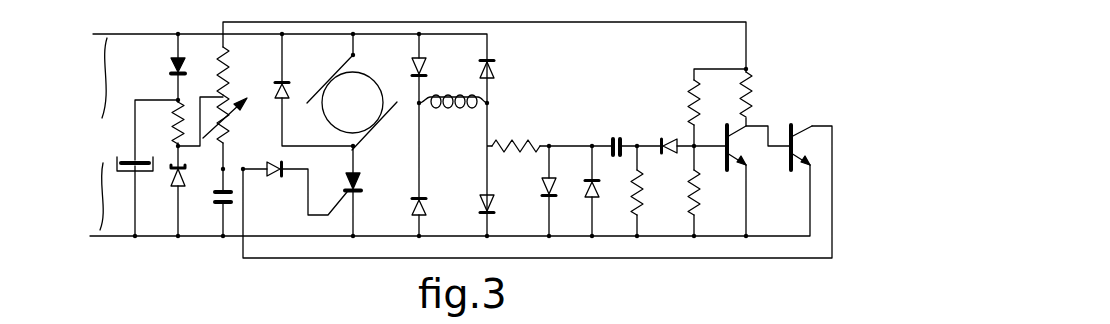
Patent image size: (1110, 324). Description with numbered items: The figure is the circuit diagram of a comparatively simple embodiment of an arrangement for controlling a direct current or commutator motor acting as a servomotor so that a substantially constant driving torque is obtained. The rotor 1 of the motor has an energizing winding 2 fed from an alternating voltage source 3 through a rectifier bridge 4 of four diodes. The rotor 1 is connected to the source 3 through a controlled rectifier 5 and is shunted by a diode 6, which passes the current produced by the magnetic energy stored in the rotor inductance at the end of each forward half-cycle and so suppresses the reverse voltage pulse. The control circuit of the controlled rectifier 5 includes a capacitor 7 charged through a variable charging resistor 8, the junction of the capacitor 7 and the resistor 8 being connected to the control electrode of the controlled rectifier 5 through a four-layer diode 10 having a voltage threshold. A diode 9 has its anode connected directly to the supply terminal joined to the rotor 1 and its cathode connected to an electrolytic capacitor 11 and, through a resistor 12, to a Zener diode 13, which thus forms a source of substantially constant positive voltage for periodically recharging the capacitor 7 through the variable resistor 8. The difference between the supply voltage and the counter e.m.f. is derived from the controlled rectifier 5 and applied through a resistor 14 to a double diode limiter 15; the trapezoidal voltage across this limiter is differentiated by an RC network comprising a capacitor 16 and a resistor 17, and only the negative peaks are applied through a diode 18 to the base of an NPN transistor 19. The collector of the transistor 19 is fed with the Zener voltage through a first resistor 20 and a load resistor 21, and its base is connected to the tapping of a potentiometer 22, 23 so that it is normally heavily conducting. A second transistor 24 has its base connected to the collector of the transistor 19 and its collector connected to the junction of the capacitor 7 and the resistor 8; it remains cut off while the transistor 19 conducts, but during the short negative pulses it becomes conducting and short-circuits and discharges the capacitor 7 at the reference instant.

The rotor 1 is at (345, 114).
The energizing winding 2 is at (455, 109).
The alternating voltage source 3 is at (89, 141).
The rectifier bridge 4 is at (443, 186).
The controlled rectifier 5 is at (361, 178).
The diode 6 is at (277, 88).
The capacitor 7 is at (216, 196).
The variable charging resistor 8 is at (232, 134).
The diode 9 is at (171, 66).
The four-layer diode 10 is at (272, 176).
The electrolytic capacitor 11 is at (128, 172).
The resistor 12 is at (176, 135).
The Zener diode 13 is at (172, 182).
The resistor 14 is at (518, 140).
The double diode limiter 15 is at (558, 226).
The capacitor 16 is at (615, 139).
The resistor 17 is at (641, 203).
The diode 18 is at (664, 139).
The transistor 19 is at (747, 165).
The first resistor 20 is at (216, 75).
The load resistor 21 is at (752, 95).
The potentiometer 22 is at (690, 98).
The potentiometer 23 is at (698, 203).
The second transistor 24 is at (786, 136).